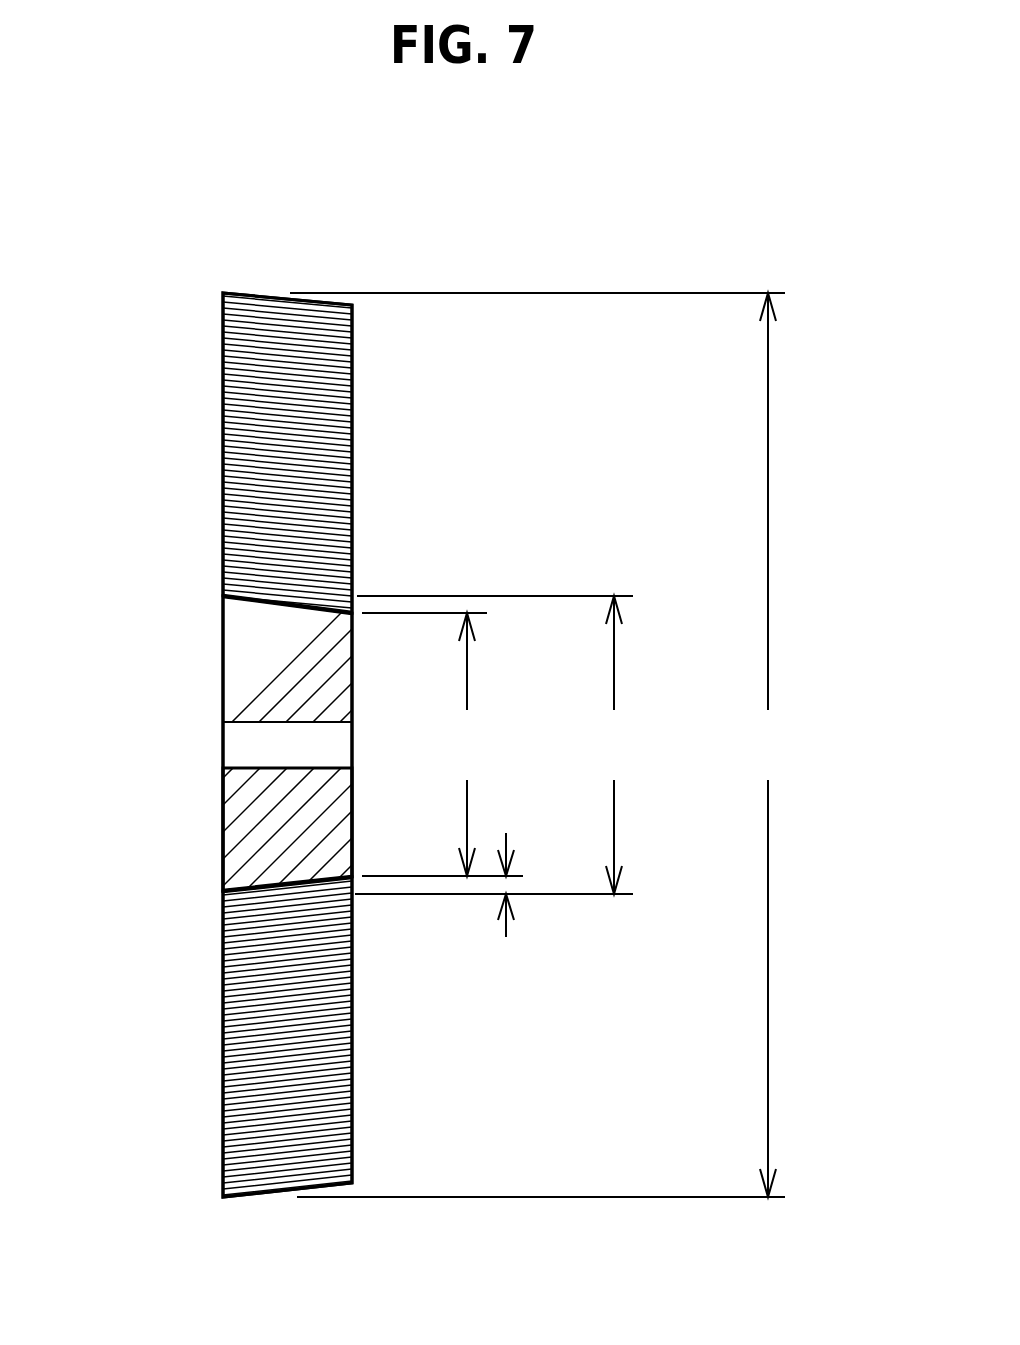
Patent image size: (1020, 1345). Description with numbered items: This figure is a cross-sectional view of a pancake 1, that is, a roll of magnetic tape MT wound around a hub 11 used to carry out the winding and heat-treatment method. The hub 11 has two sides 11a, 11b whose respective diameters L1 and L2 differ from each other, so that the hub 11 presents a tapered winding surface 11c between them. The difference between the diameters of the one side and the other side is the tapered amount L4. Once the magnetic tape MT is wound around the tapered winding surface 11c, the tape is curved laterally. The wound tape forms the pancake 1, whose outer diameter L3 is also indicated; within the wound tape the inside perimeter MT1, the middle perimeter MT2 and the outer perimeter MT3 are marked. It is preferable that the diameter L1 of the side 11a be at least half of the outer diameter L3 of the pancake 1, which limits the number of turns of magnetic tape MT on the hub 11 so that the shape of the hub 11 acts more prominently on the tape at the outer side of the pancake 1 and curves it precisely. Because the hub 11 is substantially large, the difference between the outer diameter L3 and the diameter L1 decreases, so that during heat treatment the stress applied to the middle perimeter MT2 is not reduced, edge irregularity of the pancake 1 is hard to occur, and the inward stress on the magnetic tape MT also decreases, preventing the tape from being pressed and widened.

The pancake 1 is at (412, 247).
The hub 11 is at (202, 665).
The side 11a is at (222, 819).
The side 11b is at (352, 795).
The tapered winding surface 11c is at (313, 883).
The magnetic tape MT is at (252, 1197).
The inside perimeter MT1 is at (270, 626).
The middle perimeter MT2 is at (273, 433).
The outer perimeter MT3 is at (258, 295).
The diameter of side 11a L1 is at (494, 745).
The diameter of side 11b L2 is at (442, 744).
The outer diameter of the pancake L3 is at (538, 745).
The tapered amount L4 is at (506, 885).